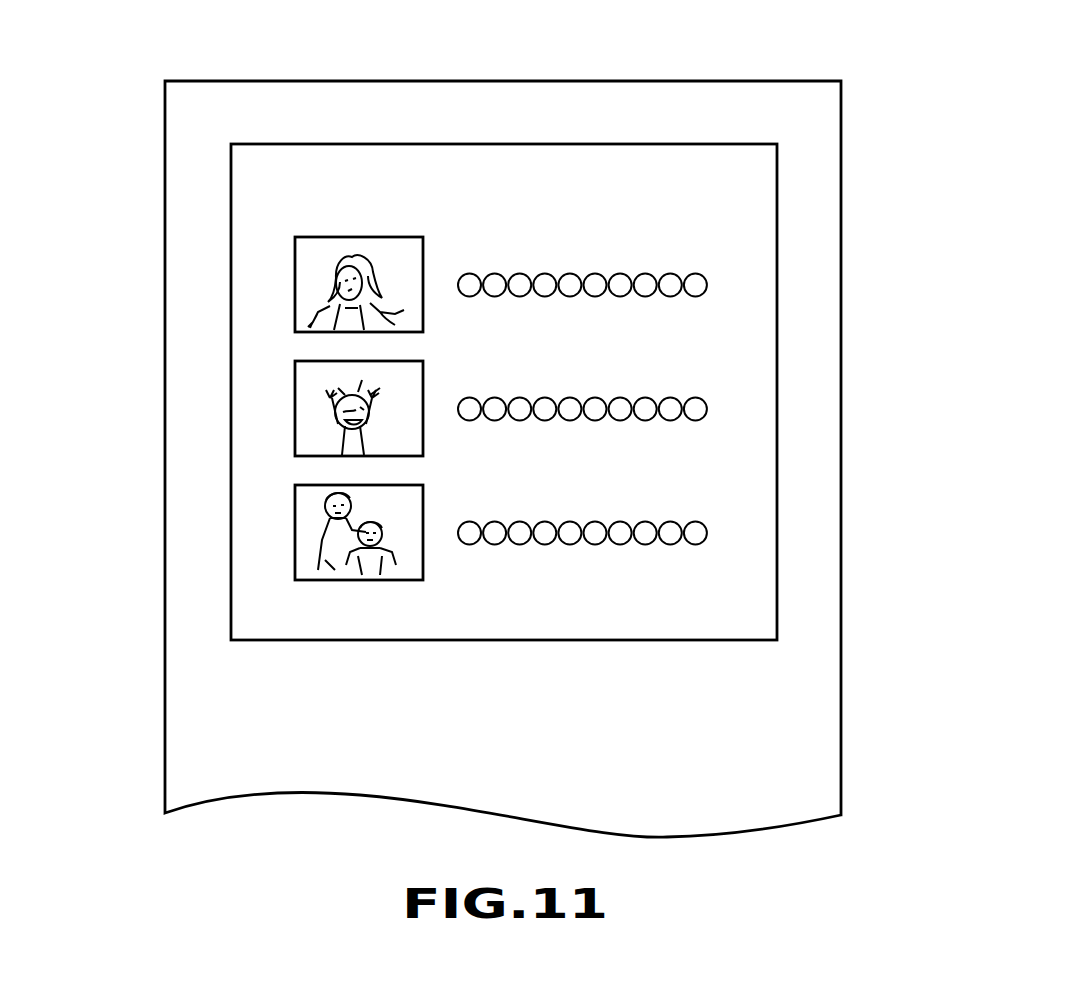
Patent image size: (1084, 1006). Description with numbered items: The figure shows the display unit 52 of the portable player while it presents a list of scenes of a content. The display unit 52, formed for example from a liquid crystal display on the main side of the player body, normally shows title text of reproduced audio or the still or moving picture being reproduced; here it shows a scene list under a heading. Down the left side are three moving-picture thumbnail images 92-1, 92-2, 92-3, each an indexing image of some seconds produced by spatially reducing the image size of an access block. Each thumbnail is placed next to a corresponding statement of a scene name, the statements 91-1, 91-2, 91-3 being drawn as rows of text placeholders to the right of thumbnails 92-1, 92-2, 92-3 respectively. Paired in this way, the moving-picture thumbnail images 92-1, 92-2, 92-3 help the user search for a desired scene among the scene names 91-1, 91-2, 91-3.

The display unit 52 is at (505, 144).
The moving-picture thumbnail image 92-1 is at (295, 270).
The moving-picture thumbnail image 92-2 is at (295, 393).
The moving-picture thumbnail image 92-3 is at (295, 518).
The statement of scene name 91-1 is at (722, 284).
The statement of scene name 91-2 is at (722, 408).
The statement of scene name 91-3 is at (722, 532).